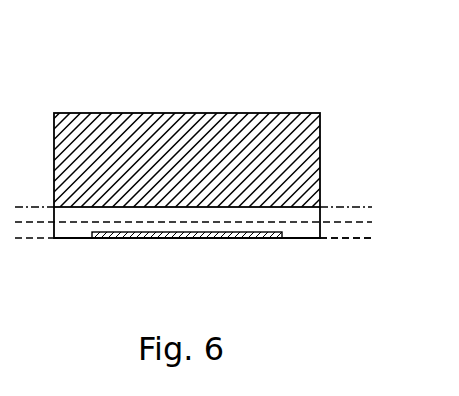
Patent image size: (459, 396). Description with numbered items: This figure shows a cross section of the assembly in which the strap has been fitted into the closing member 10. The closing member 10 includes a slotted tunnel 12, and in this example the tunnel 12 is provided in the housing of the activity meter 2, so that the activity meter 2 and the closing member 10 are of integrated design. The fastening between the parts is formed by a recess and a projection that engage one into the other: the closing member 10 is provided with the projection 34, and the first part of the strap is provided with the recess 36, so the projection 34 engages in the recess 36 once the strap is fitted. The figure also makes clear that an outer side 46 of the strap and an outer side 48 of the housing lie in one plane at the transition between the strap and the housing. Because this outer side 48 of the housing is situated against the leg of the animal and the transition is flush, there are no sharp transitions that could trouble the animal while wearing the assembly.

The activity meter 2 is at (297, 129).
The closing member 10 is at (328, 202).
The slotted tunnel 12 is at (314, 215).
The projection 34 is at (121, 238).
The recess 36 is at (268, 238).
The outer side of the strap 46 is at (361, 238).
The outer side of the housing 48 is at (193, 238).